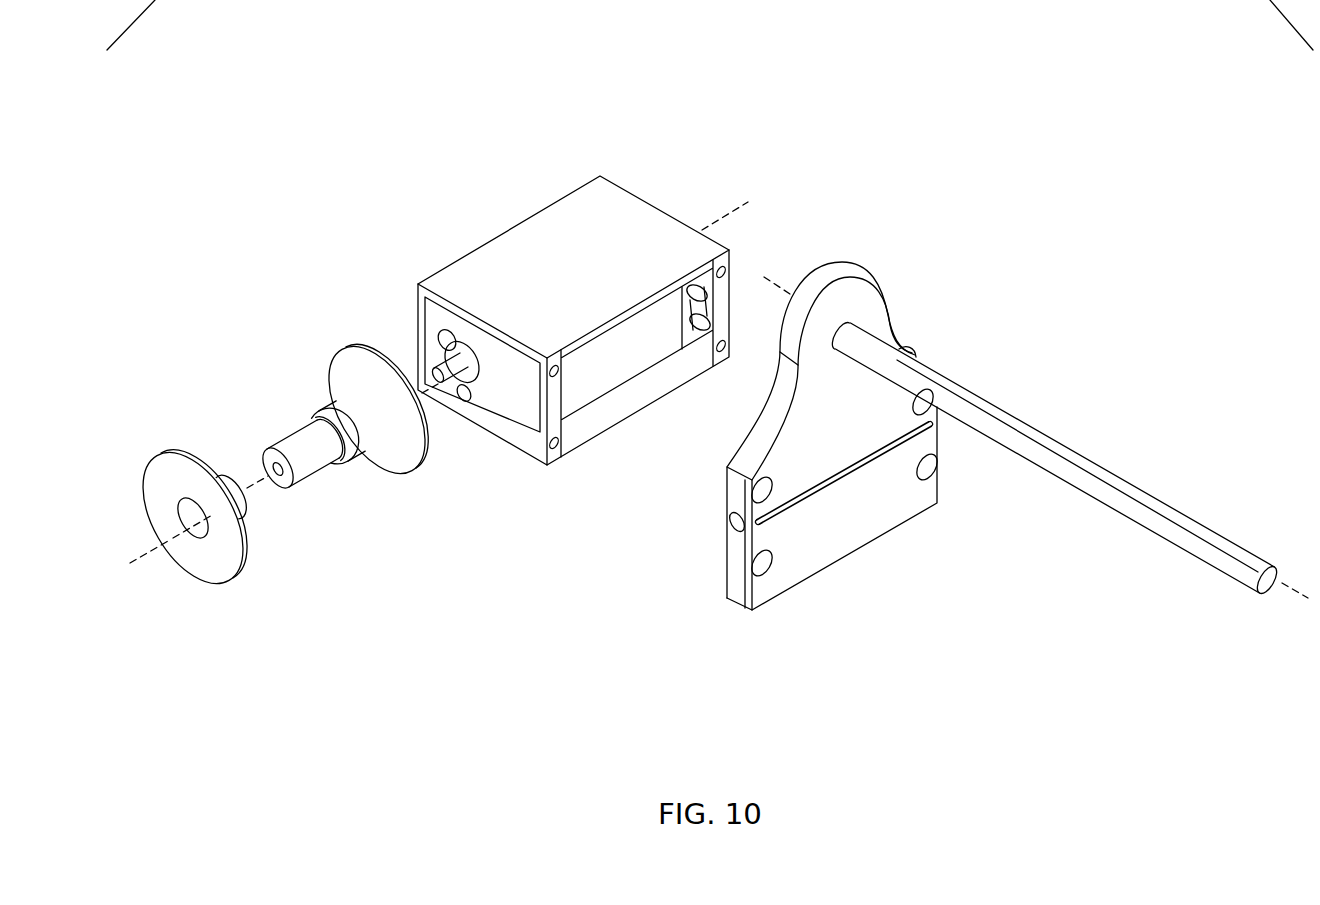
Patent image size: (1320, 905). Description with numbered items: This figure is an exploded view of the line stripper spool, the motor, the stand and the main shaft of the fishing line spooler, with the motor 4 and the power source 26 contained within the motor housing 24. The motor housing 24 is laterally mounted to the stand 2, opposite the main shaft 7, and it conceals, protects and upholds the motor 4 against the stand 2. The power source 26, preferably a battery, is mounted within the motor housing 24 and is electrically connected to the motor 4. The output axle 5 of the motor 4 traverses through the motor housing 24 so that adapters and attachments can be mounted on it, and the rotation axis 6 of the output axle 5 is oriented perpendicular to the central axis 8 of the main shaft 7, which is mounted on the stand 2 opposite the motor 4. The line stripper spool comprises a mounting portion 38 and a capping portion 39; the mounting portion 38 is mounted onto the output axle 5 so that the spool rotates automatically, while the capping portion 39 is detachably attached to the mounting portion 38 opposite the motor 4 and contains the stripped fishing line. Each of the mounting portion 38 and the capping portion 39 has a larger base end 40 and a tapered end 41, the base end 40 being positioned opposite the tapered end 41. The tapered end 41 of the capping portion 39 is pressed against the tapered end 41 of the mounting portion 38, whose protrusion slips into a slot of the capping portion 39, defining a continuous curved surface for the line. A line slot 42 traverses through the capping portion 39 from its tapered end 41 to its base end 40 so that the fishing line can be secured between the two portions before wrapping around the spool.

The stand 2 is at (835, 261).
The motor 4 is at (458, 337).
The output axle 5 is at (428, 391).
The rotation axis 6 is at (734, 209).
The main shaft 7 is at (1218, 538).
The central axis 8 is at (1275, 579).
The motor housing 24 is at (522, 233).
The power source 26 is at (630, 368).
The mounting portion 38 is at (303, 397).
The capping portion 39 is at (260, 532).
The base end 40 is at (177, 472).
The tapered end 41 is at (227, 477).
The line slot 42 is at (265, 468).